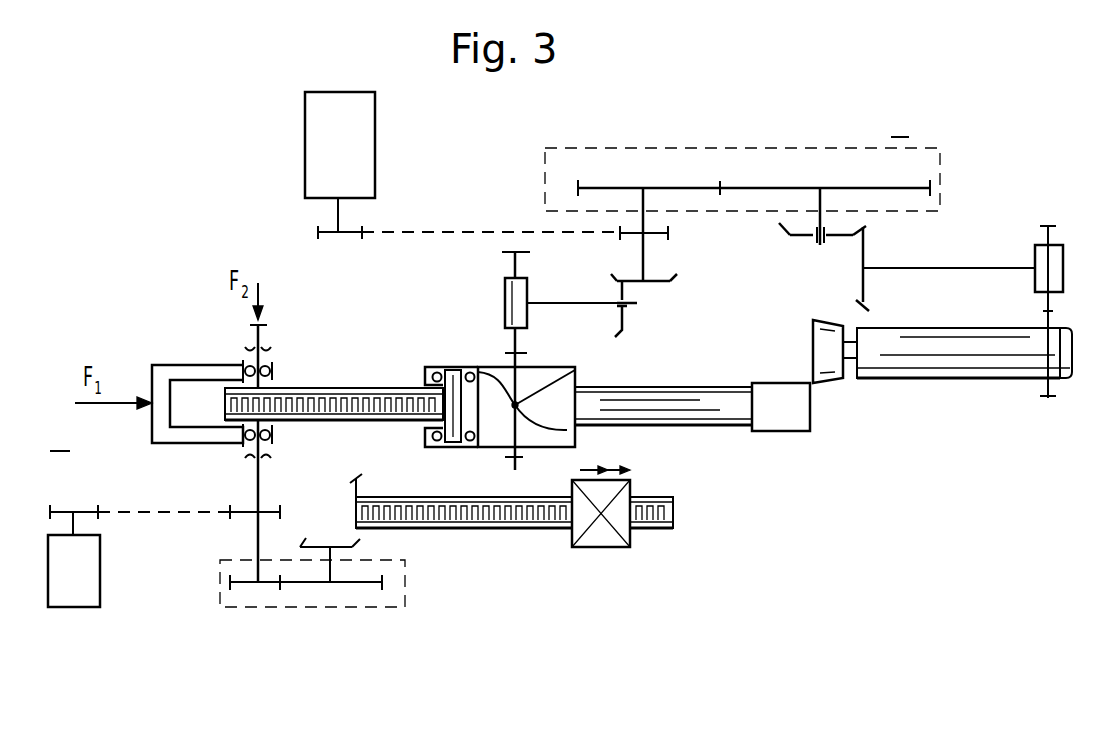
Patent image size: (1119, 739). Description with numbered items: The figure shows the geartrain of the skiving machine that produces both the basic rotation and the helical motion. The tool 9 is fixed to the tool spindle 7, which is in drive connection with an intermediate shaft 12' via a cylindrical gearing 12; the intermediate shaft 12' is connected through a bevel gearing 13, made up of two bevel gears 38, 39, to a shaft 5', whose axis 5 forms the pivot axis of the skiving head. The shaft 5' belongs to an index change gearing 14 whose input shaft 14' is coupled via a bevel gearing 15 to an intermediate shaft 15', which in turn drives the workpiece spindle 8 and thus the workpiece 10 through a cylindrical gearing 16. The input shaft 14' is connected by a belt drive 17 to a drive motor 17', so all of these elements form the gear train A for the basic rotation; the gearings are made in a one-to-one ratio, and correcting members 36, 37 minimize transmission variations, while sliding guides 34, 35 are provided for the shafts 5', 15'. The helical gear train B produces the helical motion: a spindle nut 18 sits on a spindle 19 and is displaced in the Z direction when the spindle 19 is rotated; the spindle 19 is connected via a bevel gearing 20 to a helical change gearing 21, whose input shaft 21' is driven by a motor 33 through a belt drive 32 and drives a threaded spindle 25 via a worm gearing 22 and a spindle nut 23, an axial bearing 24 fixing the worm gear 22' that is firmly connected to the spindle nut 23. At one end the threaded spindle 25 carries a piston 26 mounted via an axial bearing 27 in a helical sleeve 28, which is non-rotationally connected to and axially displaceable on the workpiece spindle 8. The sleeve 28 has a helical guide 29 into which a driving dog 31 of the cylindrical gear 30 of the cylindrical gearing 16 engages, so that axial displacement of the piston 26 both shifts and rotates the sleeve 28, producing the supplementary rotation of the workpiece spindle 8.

The axis 5 is at (825, 178).
The shaft 5' is at (800, 177).
The tool spindle 7 is at (948, 368).
The workpiece spindle 8 is at (518, 346).
The tool 9 is at (820, 385).
The workpiece 10 is at (762, 420).
The cylindrical gearing 12 is at (1068, 312).
The intermediate shaft 12' is at (949, 239).
The bevel gearing 13 is at (872, 252).
The index change gearing 14 is at (754, 141).
The input shaft 14' is at (644, 196).
The bevel gearing 15 is at (629, 224).
The intermediate shaft 15' is at (547, 209).
The cylindrical gearing 16 is at (703, 408).
The belt drive 17 is at (469, 205).
The drive motor 17' is at (366, 162).
The spindle nut 18 is at (595, 535).
The spindle 19 is at (478, 530).
The bevel gearing 20 is at (345, 548).
The helical change gearing 21 is at (312, 614).
The input shaft 21' is at (228, 565).
The worm gearing 22 is at (162, 417).
The worm gear 22' is at (239, 329).
The spindle nut 23 is at (245, 428).
The axial bearing 24 is at (272, 362).
The threaded spindle 25 is at (343, 400).
The piston 26 is at (447, 447).
The axial bearing 27 is at (432, 365).
The helical sleeve 28 is at (537, 437).
The helical guide 29 is at (603, 468).
The cylindrical gear 30 is at (493, 452).
The driving dog 31 is at (582, 370).
The belt drive 32 is at (147, 513).
The motor 33 is at (79, 587).
The sliding guide 34 is at (830, 226).
The sliding guide 35 is at (617, 297).
The correcting member 36 is at (1055, 262).
The correcting member 37 is at (505, 300).
The bevel gear 38 is at (792, 230).
The bevel gear 39 is at (866, 290).
The gear train A is at (742, 158).
The helical gear train B is at (60, 437).
The Z direction Z is at (663, 528).